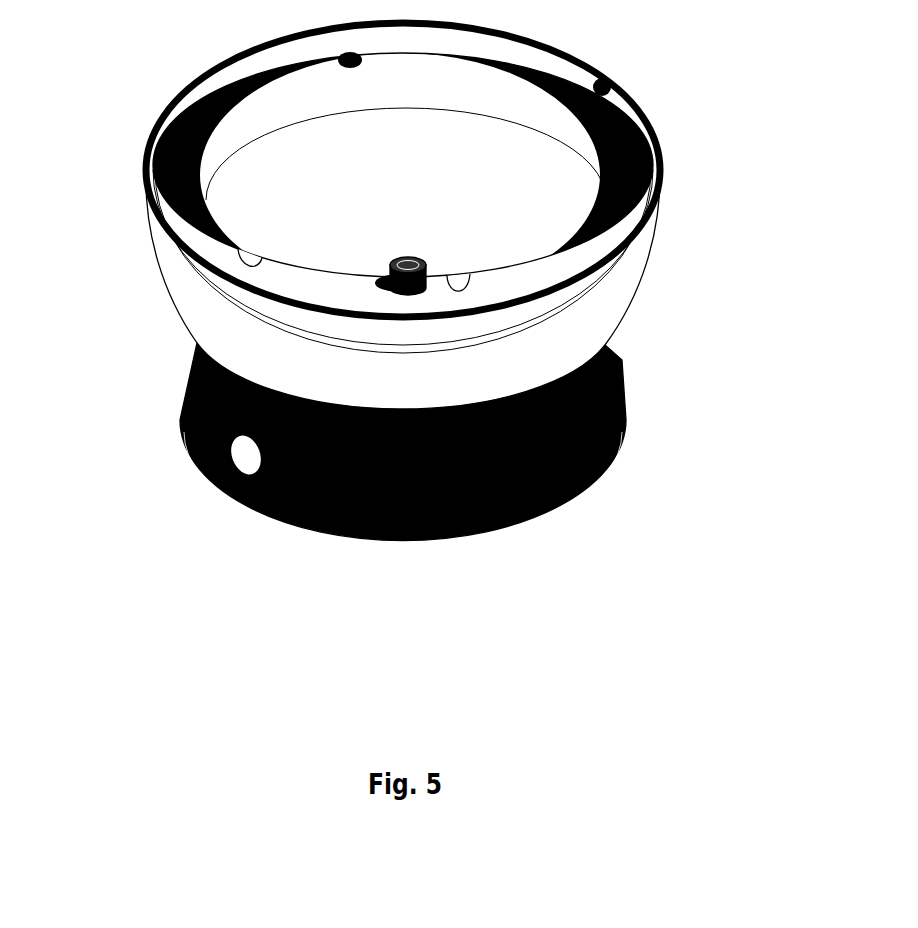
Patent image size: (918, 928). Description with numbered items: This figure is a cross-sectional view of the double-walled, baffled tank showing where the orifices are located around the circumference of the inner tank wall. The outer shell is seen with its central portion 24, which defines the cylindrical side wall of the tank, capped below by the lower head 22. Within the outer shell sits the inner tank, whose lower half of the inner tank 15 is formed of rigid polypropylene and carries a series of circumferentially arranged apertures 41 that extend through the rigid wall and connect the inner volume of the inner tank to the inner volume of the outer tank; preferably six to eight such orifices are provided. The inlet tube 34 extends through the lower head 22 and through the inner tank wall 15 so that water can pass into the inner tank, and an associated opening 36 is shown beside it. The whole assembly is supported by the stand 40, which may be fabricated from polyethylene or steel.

The lower half of the inner tank 15 is at (403, 175).
The lower head 22 is at (177, 302).
The central portion 24 is at (612, 80).
The inlet tube 34 is at (408, 252).
The drain hole 36 is at (375, 278).
The stand 40 is at (616, 357).
The apertures 41 is at (367, 58).